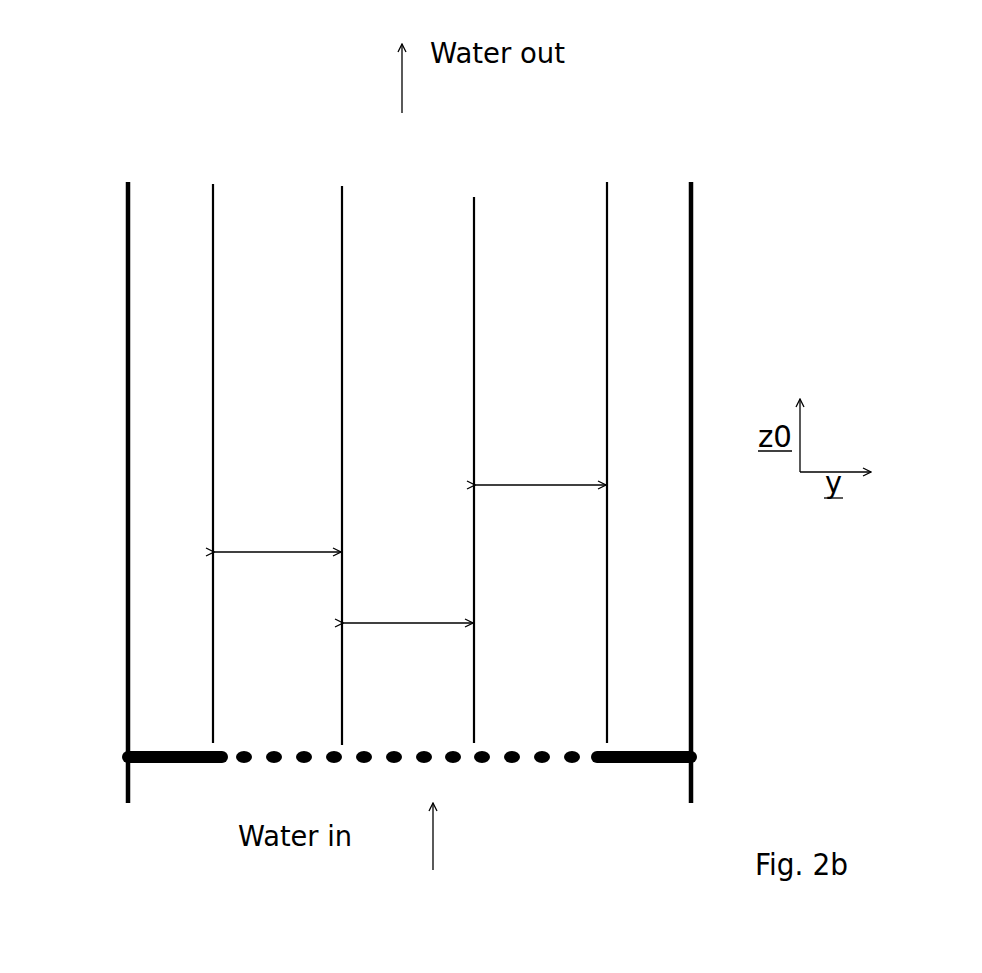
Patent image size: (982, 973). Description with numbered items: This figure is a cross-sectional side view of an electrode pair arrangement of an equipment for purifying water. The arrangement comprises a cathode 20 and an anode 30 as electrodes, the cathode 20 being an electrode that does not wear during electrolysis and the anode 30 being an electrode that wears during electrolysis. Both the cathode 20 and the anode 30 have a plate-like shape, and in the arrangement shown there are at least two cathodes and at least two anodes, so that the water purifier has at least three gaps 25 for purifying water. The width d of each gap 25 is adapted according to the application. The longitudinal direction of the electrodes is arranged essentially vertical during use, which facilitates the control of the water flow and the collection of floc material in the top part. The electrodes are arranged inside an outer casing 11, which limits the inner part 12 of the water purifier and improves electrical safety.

The outer casing 11 is at (128, 184).
The inner part 12 is at (183, 386).
The cathode 20 is at (213, 184).
The anode 30 is at (342, 186).
The gap 25 is at (272, 484).